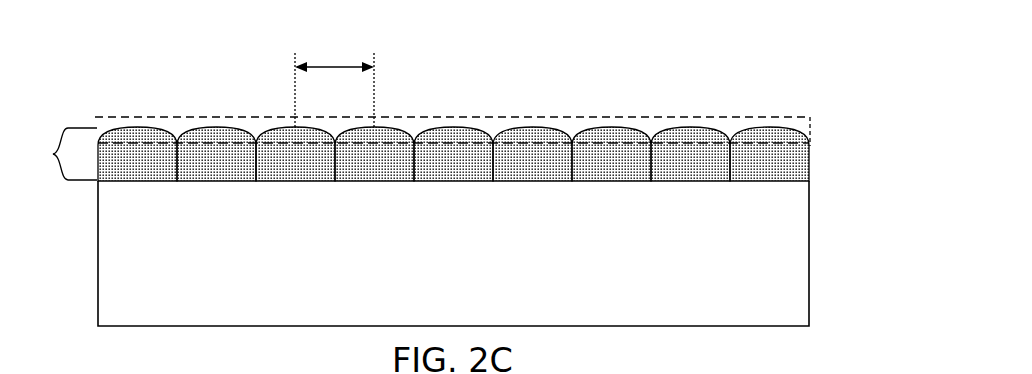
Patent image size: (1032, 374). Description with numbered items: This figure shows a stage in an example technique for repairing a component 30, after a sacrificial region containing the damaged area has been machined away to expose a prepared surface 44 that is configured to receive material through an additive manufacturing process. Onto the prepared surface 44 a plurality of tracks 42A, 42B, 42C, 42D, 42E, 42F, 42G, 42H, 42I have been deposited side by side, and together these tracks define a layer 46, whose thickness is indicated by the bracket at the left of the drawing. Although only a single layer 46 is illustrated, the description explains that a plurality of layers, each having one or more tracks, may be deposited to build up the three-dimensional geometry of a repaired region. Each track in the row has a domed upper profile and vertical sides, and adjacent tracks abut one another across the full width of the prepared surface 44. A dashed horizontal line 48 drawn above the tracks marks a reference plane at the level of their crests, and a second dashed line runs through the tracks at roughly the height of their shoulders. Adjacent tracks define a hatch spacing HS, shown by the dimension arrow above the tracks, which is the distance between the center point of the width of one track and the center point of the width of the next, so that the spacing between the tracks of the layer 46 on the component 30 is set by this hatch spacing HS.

The component 30 is at (853, 54).
The track 42A is at (127, 182).
The track 42B is at (212, 127).
The track 42C is at (297, 182).
The track 42D is at (400, 127).
The track 42E is at (455, 182).
The track 42F is at (533, 127).
The track 42G is at (613, 182).
The track 42H is at (690, 127).
The track 42I is at (784, 182).
The prepared surface 44 is at (763, 172).
The layer 46 is at (59, 154).
The top surface plane 48 is at (113, 117).
The hatch spacing HS is at (334, 84).